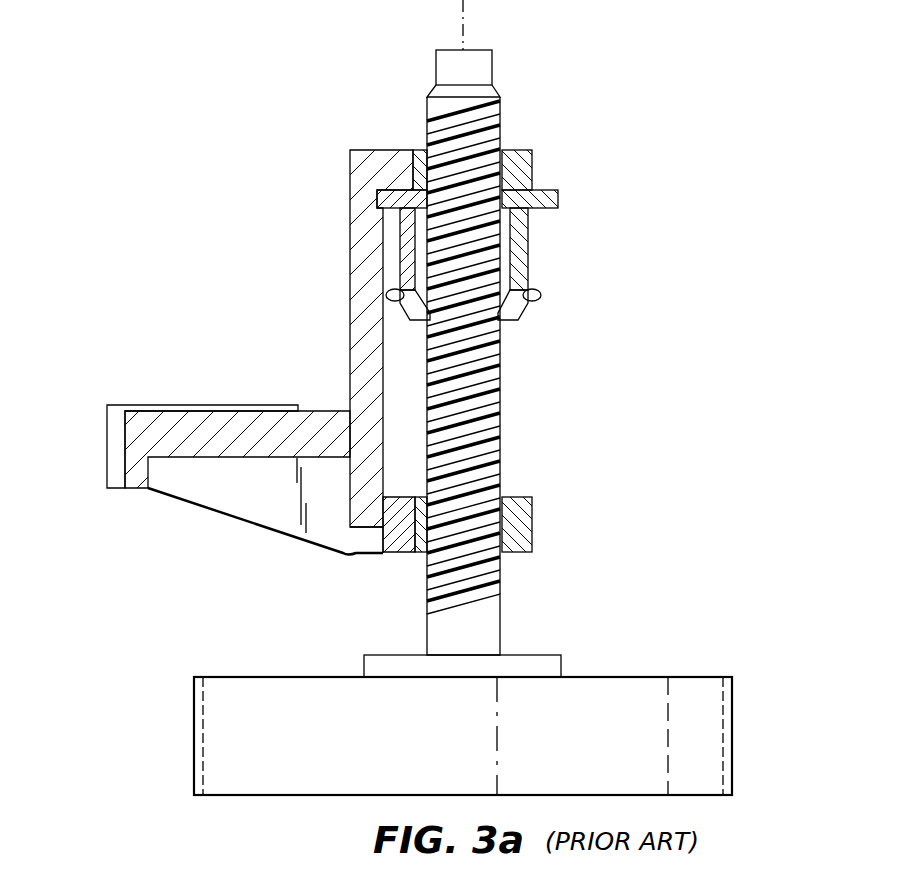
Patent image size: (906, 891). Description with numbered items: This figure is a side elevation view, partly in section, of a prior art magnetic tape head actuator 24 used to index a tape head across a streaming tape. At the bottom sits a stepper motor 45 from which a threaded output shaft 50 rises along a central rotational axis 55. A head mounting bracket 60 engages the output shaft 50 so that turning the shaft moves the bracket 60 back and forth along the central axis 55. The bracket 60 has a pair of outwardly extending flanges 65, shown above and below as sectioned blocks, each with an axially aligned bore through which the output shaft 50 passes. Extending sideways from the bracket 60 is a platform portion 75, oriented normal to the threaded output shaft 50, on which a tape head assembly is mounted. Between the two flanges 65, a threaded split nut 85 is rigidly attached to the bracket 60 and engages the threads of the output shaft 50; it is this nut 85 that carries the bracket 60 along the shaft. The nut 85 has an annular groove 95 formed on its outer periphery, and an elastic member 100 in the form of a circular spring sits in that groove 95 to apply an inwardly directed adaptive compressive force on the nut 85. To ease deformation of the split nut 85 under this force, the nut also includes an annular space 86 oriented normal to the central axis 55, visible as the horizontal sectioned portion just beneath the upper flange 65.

The prior art adjustment assembly 24 is at (93, 776).
The stepper motor 45 is at (703, 698).
The threaded output shaft 50 is at (500, 440).
The central rotational axis 55 is at (465, 8).
The head mounting bracket 60 is at (349, 302).
The outwardly extending flanges 65 is at (533, 163).
The platform portion 75 is at (140, 404).
The threaded split nut 85 is at (529, 250).
The annular space 86 is at (525, 212).
The annular groove 95 is at (522, 328).
The elastic member 100 is at (541, 293).